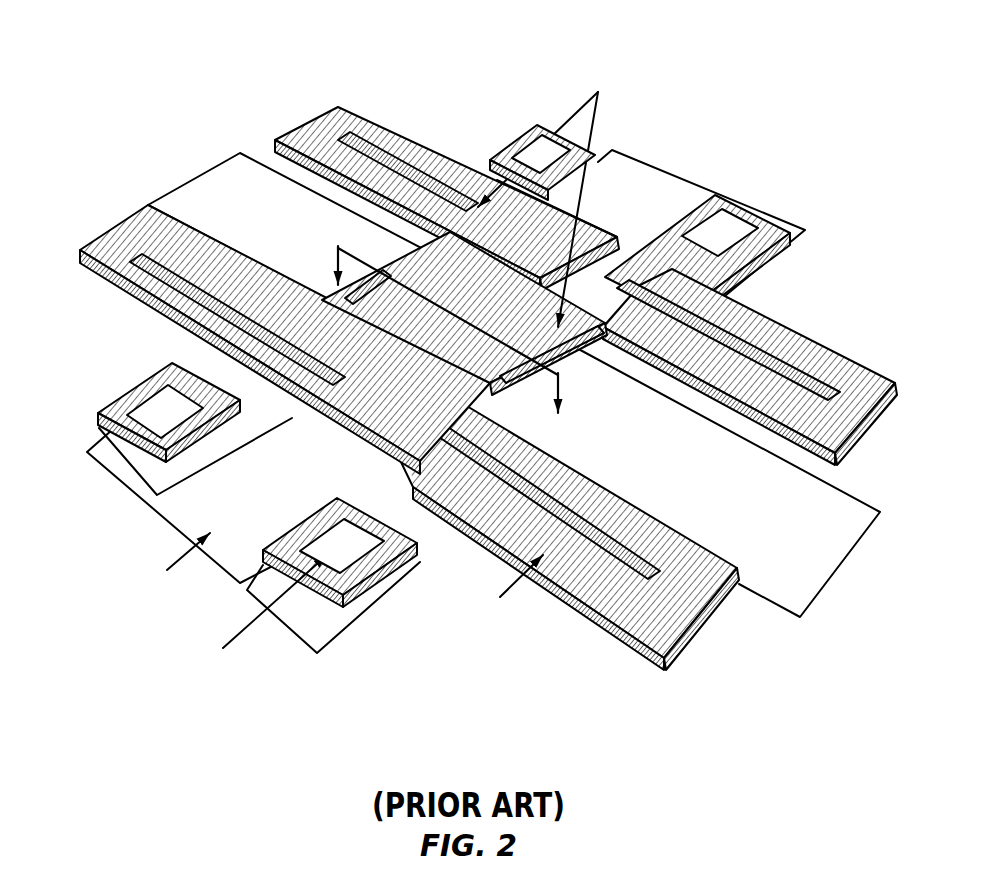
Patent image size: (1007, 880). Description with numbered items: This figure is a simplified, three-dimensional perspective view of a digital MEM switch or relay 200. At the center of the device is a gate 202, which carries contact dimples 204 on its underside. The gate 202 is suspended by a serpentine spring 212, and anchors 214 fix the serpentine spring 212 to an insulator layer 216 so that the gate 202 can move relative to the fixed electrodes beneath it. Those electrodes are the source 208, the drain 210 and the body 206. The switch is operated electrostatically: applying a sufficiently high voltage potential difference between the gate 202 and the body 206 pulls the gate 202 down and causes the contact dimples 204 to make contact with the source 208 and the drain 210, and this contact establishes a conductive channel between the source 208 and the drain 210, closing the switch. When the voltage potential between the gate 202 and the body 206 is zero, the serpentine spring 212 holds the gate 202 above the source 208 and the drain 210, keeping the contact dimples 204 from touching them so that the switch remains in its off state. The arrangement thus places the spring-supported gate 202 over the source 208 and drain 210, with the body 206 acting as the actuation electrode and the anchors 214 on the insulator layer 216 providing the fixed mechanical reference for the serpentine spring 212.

The MEM switch 200 is at (539, 352).
The gate 202 is at (463, 340).
The contact dimples 204 is at (500, 256).
The body 206 is at (189, 516).
The source 208 is at (295, 222).
The drain 210 is at (727, 478).
The serpentine spring 212 is at (496, 371).
The anchors 214 is at (433, 400).
The insulator layer 216 is at (436, 408).